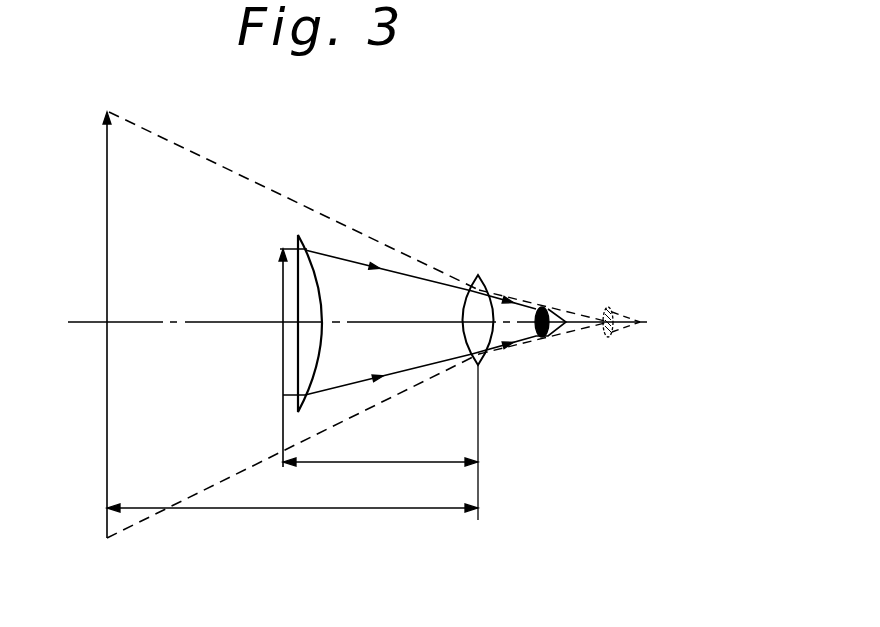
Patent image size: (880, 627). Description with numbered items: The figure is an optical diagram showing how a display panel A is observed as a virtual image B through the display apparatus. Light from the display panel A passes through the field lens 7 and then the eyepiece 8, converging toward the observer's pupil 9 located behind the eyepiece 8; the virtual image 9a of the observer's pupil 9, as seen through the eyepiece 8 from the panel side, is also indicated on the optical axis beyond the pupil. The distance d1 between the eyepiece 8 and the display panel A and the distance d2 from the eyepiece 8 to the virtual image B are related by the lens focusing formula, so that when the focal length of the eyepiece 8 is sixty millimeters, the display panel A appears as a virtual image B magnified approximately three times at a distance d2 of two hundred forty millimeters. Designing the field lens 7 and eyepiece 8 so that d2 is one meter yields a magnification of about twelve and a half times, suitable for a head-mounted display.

The field lens 7 is at (310, 352).
The eyepiece 8 is at (480, 345).
The observer's pupil 9 is at (541, 306).
The virtual image of the observer's pupil 9a is at (609, 306).
The display panel A is at (283, 292).
The virtual image of the display panel B is at (107, 293).
The distance between the eyepiece and the display panel d1 is at (412, 462).
The distance from the eyepiece to the virtual image d2 is at (327, 508).